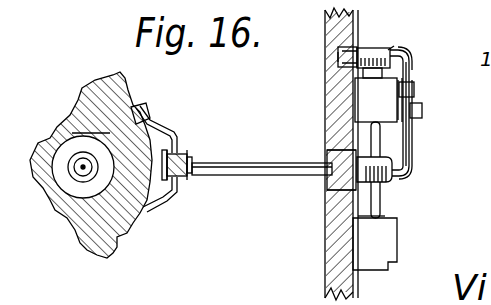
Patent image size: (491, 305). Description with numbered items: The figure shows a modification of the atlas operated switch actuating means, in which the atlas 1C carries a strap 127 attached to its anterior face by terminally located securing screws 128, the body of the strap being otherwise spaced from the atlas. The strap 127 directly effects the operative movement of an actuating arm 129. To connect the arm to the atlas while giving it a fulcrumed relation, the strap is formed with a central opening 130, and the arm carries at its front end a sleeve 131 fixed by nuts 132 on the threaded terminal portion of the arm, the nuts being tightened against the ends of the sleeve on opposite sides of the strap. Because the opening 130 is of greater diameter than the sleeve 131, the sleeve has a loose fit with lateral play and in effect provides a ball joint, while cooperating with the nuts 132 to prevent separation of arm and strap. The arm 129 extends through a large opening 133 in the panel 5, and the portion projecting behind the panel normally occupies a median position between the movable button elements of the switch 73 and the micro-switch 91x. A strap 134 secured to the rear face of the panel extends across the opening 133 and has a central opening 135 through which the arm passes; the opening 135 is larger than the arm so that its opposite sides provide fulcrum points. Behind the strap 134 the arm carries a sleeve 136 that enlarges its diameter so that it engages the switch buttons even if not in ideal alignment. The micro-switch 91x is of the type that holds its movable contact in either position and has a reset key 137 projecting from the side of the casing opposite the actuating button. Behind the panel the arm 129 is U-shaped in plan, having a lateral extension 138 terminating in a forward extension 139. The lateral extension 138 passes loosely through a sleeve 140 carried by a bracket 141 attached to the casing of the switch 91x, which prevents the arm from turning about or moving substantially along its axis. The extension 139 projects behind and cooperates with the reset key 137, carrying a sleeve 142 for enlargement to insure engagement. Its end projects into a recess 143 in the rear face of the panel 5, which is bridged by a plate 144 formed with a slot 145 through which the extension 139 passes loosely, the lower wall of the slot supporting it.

The casting / housing 1C is at (86, 84).
The strap 127 is at (163, 130).
The securing screws 128 is at (168, 212).
The actuating arm 129 is at (247, 163).
The central opening 130 is at (172, 160).
The sleeve 131 is at (180, 163).
The nuts 132 is at (184, 177).
The opening 133 is at (335, 158).
The strap 134 is at (330, 187).
The central opening 135 is at (328, 136).
The sleeve 136 is at (389, 183).
The reset key 137 is at (411, 66).
The lateral extension 138 is at (414, 144).
The forward extension 139 is at (406, 47).
The sleeve 140 is at (423, 113).
The bracket 141 is at (415, 92).
The sleeve 142 is at (390, 48).
The recess 143 is at (342, 50).
The plate 144 is at (358, 50).
The slot 145 is at (338, 68).
The panel 5 is at (330, 240).
The switch 73 is at (375, 243).
The micro-switch 91x is at (381, 95).